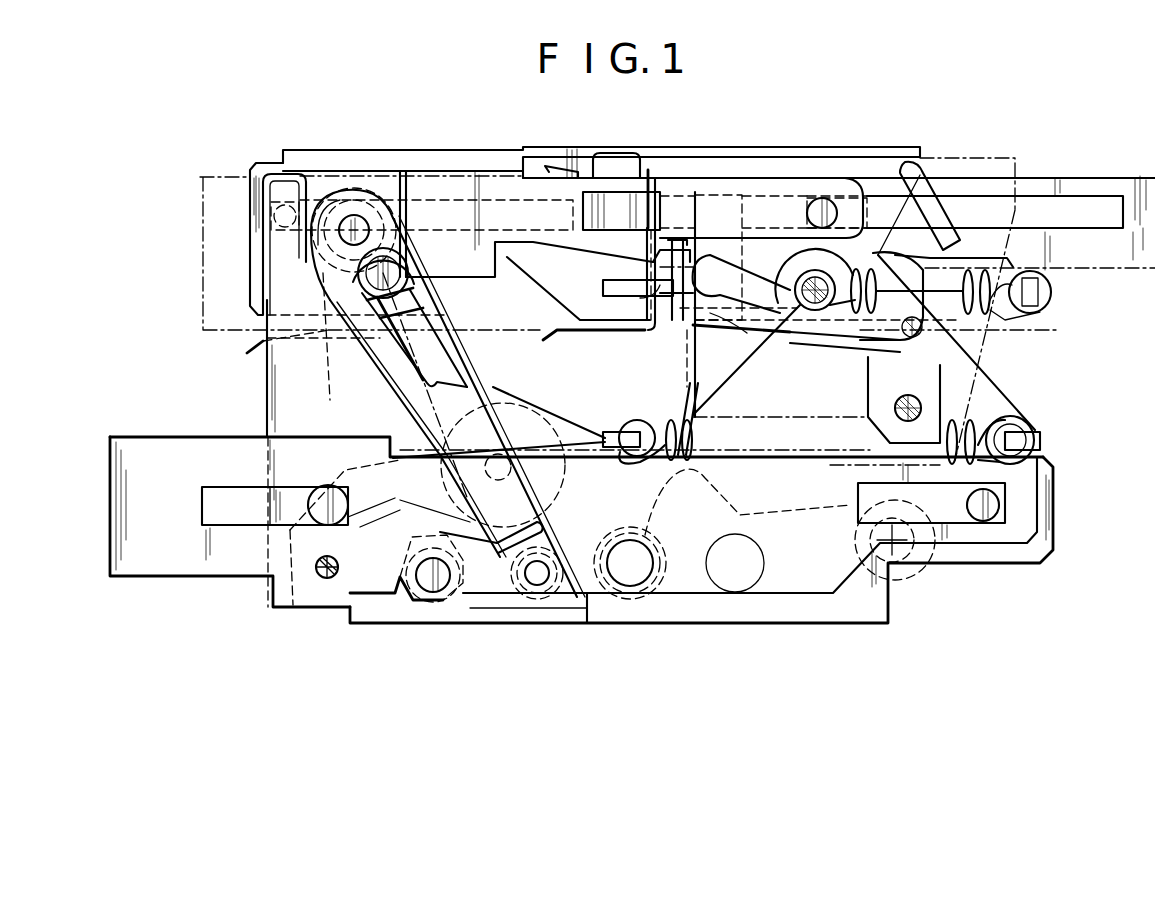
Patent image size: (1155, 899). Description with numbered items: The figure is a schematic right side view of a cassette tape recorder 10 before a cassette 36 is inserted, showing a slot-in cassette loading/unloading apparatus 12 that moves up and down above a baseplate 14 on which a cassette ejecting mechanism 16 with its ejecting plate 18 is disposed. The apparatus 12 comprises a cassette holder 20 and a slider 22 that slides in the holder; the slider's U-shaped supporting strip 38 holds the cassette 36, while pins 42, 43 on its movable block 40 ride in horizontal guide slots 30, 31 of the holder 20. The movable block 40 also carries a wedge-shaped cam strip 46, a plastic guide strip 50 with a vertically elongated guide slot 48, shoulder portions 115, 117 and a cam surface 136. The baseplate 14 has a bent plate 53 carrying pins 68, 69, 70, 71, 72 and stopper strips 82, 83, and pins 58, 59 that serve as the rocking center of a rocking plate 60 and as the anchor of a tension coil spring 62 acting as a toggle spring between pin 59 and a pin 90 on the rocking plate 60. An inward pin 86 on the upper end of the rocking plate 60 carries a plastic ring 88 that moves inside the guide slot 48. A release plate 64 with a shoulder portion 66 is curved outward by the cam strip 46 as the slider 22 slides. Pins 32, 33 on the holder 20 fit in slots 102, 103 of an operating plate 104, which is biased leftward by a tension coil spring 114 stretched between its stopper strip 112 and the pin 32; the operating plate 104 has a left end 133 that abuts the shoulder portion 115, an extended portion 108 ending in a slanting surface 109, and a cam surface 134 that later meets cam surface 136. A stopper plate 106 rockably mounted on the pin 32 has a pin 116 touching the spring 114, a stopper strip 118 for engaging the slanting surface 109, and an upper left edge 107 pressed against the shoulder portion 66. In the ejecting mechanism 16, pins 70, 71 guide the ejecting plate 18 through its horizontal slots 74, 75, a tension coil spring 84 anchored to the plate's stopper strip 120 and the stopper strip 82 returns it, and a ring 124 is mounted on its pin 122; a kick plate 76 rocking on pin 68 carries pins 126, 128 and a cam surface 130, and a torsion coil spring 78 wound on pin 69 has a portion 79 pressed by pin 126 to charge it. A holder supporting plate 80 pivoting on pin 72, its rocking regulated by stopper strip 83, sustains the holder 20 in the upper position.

The cassette tape recorder 10 is at (969, 131).
The cassette loading/unloading apparatus 12 is at (242, 262).
The baseplate 14 is at (850, 625).
The cassette ejecting mechanism 16 is at (242, 592).
The ejecting plate 18 is at (158, 575).
The cassette holder 20 is at (462, 160).
The slider 22 is at (413, 168).
The horizontal guide slot 30 is at (548, 244).
The horizontal guide slot 31 is at (1090, 218).
The pin 32 is at (797, 322).
The pin 33 is at (1005, 322).
The cassette 36 is at (233, 323).
The supporting strip 38 is at (598, 333).
The movable block 40 is at (582, 245).
The pin 42 is at (286, 232).
The pin 43 is at (808, 212).
The cam strip 46 is at (583, 212).
The guide slot 48 is at (340, 178).
The guide strip 50 is at (402, 188).
The bent plate 53 is at (265, 396).
The pin 58 is at (495, 480).
The pin 59 is at (538, 612).
The rocking plate 60 is at (485, 352).
The tension coil spring 62 is at (368, 350).
The release plate 64 is at (742, 236).
The shoulder portion 66 is at (735, 290).
The pin 68 is at (333, 576).
The pin 69 is at (640, 588).
The pin 70 is at (335, 522).
The pin 71 is at (1000, 512).
The pin 72 is at (918, 402).
The horizontal slot 74 is at (237, 520).
The horizontal slot 75 is at (955, 515).
The kick plate 76 is at (785, 592).
The torsion coil spring 78 is at (522, 388).
The portion of torsion spring 79 is at (680, 512).
The holder supporting plate 80 is at (985, 372).
The stopper strip 82 is at (606, 432).
The stopper strip 83 is at (853, 332).
The tension coil spring 84 is at (1030, 428).
The pin 86 is at (372, 196).
The ring 88 is at (400, 220).
The pin 90 is at (410, 262).
The slot 102 is at (790, 282).
The slot 103 is at (925, 332).
The operating plate 104 is at (862, 232).
The stopper plate 106 is at (853, 352).
The upper left edge 107 is at (697, 344).
The extended portion 108 is at (668, 325).
The slanting surface 109 is at (603, 284).
The stopper strip 112 is at (1051, 298).
The tension coil spring 114 is at (981, 350).
The shoulder portion 115 is at (670, 250).
The pin 116 is at (905, 350).
The shoulder portion 117 is at (505, 262).
The stopper strip 118 is at (680, 345).
The stopper strip 120 is at (1045, 441).
The pin 122 is at (425, 598).
The ring 124 is at (443, 605).
The pin 126 is at (735, 600).
The pin 128 is at (898, 568).
The cam surface 130 is at (520, 592).
The left end 133 is at (640, 300).
The cam surface 134 is at (742, 232).
The cam surface 136 is at (640, 250).